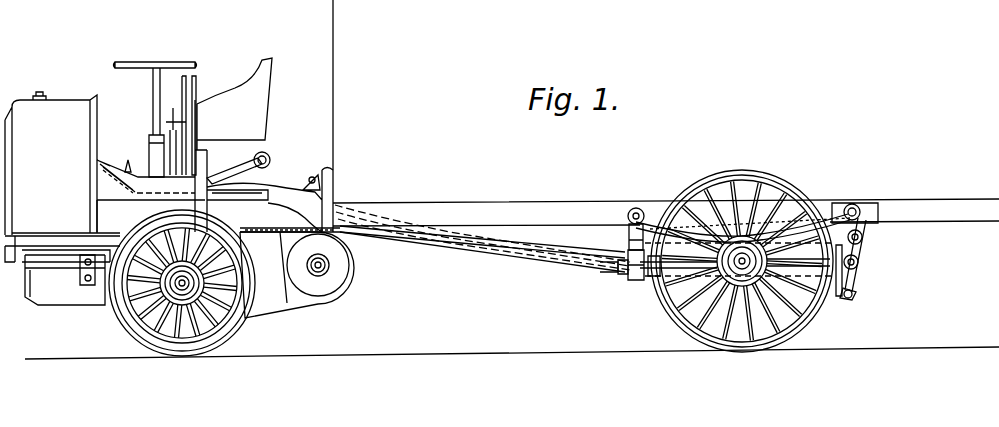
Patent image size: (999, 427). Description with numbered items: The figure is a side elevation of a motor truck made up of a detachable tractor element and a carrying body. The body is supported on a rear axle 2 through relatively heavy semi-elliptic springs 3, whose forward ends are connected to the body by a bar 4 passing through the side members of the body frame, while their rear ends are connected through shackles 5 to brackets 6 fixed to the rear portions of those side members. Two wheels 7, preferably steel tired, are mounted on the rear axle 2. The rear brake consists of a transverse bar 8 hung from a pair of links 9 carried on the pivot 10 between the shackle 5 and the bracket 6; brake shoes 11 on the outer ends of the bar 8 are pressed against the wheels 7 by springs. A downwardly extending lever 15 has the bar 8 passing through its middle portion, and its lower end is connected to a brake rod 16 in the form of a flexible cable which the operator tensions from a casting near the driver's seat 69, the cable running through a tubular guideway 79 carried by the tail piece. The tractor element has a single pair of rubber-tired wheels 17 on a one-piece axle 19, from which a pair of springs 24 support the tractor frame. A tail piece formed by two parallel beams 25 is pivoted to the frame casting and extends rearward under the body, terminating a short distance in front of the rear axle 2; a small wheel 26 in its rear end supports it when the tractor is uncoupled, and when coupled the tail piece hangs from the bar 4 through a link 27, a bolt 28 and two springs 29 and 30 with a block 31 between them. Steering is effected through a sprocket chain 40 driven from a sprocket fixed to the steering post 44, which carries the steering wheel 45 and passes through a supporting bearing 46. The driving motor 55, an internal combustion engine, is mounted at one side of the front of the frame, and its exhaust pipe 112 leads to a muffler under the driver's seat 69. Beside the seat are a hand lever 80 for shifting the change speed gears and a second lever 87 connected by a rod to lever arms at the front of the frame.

The rear axle 2 is at (790, 266).
The springs 3 is at (645, 228).
The bar 4 is at (575, 194).
The shackles 5 is at (858, 206).
The brackets 6 is at (866, 230).
The wheels 7 is at (773, 172).
The bar 8 is at (856, 280).
The links 9 is at (858, 262).
The pivot 10 is at (862, 240).
The brake shoes 11 is at (840, 298).
The lever 15 is at (853, 295).
The brake rod 16 is at (488, 257).
The wheels 17 is at (243, 320).
The axle 19 is at (175, 300).
The springs 24 is at (96, 288).
The beams 25 is at (412, 236).
The small wheel 26 is at (655, 278).
The link 27 is at (626, 223).
The bolt 28 is at (632, 282).
The spring 29 is at (629, 242).
The spring 30 is at (620, 272).
The block 31 is at (598, 272).
The sprocket chain 40 is at (233, 203).
The steering post 44 is at (153, 105).
The steering wheel 45 is at (155, 62).
The supporting bearing 46 is at (149, 150).
The driving motor 55 is at (65, 280).
The driver's seat 69 is at (255, 108).
The tubular guideway 79 is at (290, 186).
The hand lever 80 is at (183, 82).
The second lever 87 is at (196, 78).
The exhaust pipe 112 is at (228, 175).